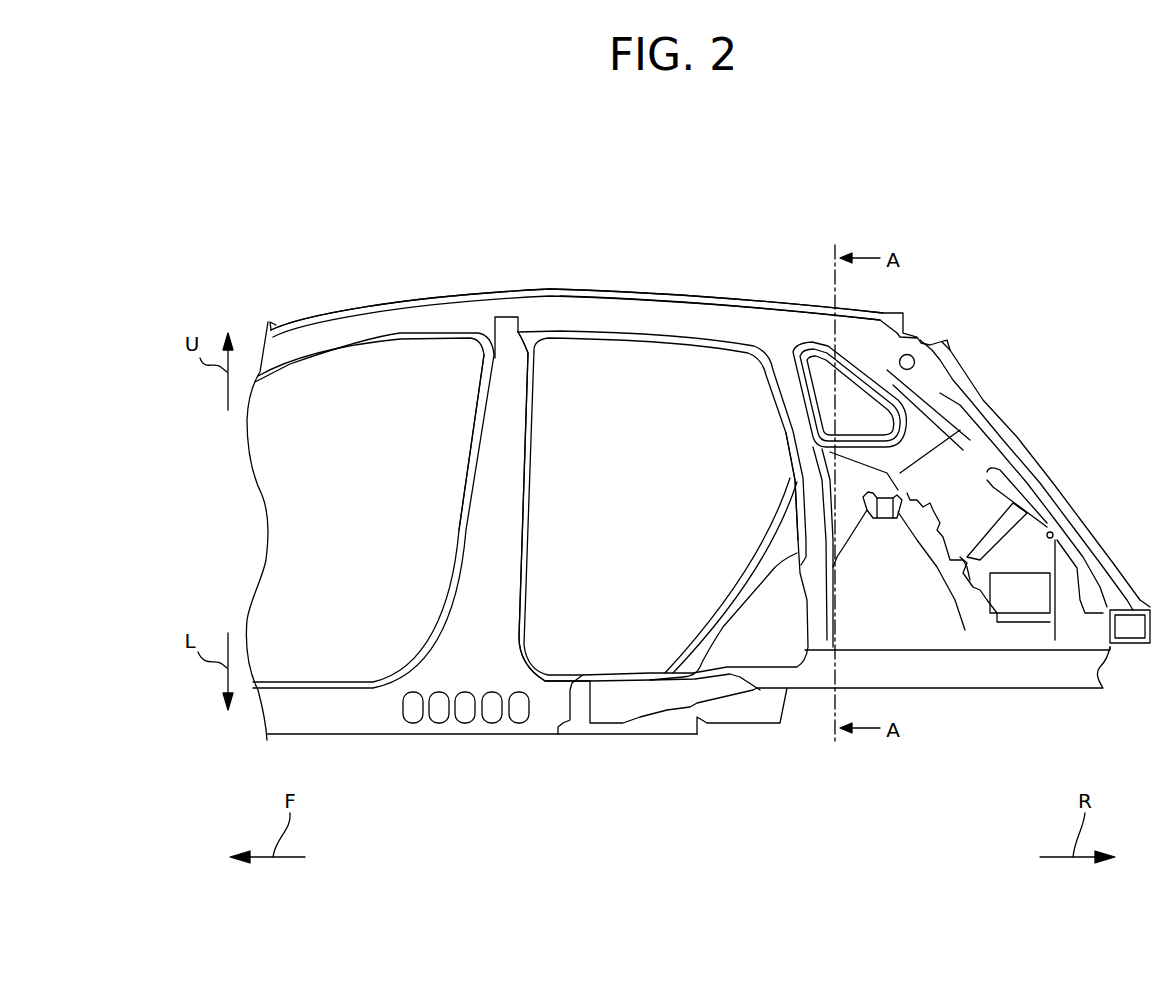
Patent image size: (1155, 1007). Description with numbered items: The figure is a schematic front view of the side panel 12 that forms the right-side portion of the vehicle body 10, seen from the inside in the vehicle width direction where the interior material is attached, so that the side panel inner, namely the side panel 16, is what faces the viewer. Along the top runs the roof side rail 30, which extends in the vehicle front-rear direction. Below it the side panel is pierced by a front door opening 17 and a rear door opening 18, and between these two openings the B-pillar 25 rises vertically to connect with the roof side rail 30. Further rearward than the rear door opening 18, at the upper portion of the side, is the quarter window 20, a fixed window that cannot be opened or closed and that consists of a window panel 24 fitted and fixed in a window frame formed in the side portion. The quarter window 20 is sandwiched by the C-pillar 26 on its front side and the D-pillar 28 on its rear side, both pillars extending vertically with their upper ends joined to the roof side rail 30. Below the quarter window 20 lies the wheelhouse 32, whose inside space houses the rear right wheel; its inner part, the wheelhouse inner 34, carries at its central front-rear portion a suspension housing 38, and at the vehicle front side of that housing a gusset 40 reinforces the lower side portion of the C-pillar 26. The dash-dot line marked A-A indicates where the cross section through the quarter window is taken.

The vehicle body 10 is at (888, 155).
The side panel 12 is at (695, 257).
The side panel inner 16 is at (730, 320).
The front door opening 17 is at (340, 412).
The rear door opening 18 is at (609, 388).
The quarter window 20 is at (903, 386).
The window panel 24 is at (866, 420).
The B-pillar 25 is at (493, 467).
The C-pillar 26 is at (784, 398).
The D-pillar 28 is at (1003, 437).
The roof side rail 30 is at (424, 317).
The wheelhouse 32 is at (777, 608).
The wheelhouse inner 34 is at (760, 612).
The suspension housing 38 is at (897, 557).
The gusset 40 is at (822, 593).